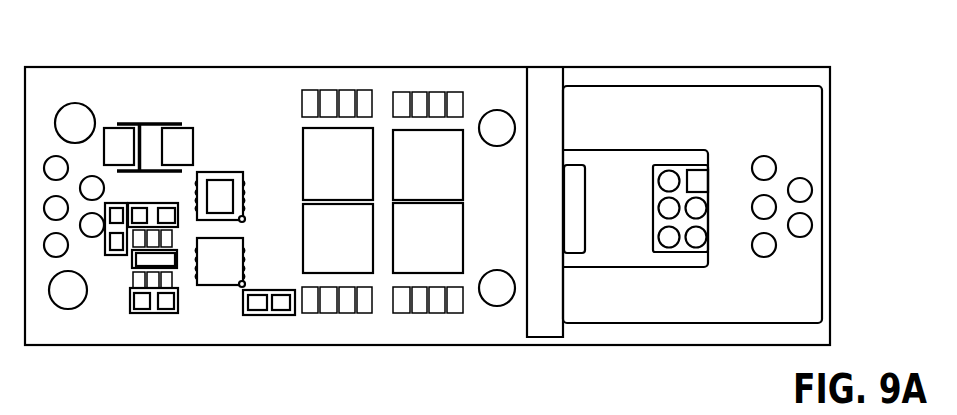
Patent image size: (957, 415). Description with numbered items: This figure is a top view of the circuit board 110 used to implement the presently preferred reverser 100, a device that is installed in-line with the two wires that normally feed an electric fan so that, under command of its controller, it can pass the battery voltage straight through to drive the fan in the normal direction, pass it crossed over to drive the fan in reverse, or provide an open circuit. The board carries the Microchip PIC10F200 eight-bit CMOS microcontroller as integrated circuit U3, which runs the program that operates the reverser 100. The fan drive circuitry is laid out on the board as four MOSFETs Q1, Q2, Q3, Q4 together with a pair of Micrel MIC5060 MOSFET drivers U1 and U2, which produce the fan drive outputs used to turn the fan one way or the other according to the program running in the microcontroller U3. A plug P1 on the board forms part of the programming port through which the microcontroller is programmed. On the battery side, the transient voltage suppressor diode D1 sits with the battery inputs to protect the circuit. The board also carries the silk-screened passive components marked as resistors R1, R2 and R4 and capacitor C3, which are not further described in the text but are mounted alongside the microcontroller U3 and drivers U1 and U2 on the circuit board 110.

The reverser 100 is at (831, 209).
The circuit board 110 is at (645, 67).
The plug P1 is at (674, 202).
The MOSFET Q1 is at (337, 271).
The MOSFET Q2 is at (445, 139).
The MOSFET Q3 is at (319, 145).
The MOSFET Q4 is at (428, 270).
The MOSFET driver U1 is at (238, 261).
The MOSFET driver U2 is at (238, 197).
The microcontroller U3 is at (138, 273).
The resistor R1 is at (168, 300).
The resistor R2 is at (153, 206).
The resistor R4 is at (269, 286).
The transient voltage suppressor diode D1 is at (162, 147).
The capacitor C3 is at (104, 236).